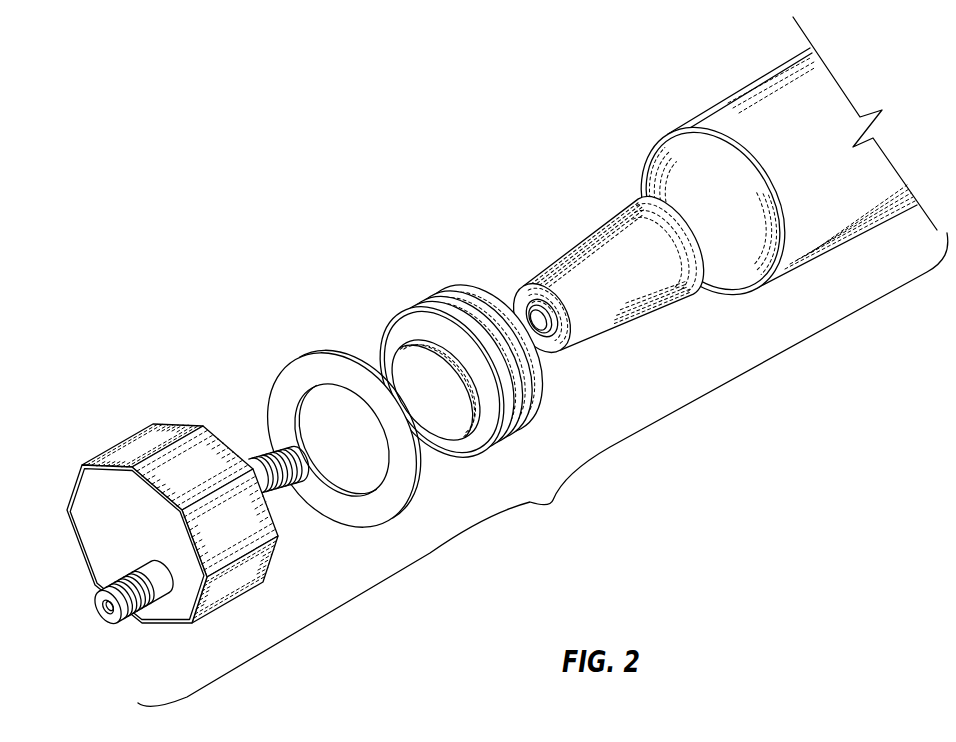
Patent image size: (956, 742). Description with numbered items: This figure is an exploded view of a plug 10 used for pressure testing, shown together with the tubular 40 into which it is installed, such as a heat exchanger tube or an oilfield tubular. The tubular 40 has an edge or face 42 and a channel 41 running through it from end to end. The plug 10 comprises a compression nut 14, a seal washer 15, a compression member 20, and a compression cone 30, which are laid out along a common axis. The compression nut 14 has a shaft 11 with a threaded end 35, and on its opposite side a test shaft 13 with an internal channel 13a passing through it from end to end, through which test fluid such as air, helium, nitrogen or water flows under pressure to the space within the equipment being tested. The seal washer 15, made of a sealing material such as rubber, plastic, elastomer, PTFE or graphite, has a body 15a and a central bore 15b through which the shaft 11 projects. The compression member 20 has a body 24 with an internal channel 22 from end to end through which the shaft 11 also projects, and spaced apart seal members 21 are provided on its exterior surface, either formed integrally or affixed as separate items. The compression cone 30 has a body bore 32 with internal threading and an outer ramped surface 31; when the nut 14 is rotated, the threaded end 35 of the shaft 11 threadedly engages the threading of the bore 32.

The plug 10 is at (550, 507).
The shaft 11 is at (262, 452).
The test shaft 13 is at (103, 619).
The internal channel 13a is at (102, 607).
The compression nut 14 is at (188, 512).
The seal washer 15 is at (340, 423).
The body 15a is at (281, 386).
The central bore 15b is at (372, 484).
The compression member 20 is at (468, 361).
The seal members 21 is at (510, 413).
The internal channel 22 is at (458, 413).
The body 24 is at (397, 333).
The compression cone 30 is at (600, 281).
The outer ramped surface 31 is at (585, 252).
The body bore 32 is at (528, 317).
The threaded end 35 is at (270, 506).
The tubular 40 is at (759, 169).
The channel 41 is at (680, 147).
The edge or face 42 is at (645, 172).